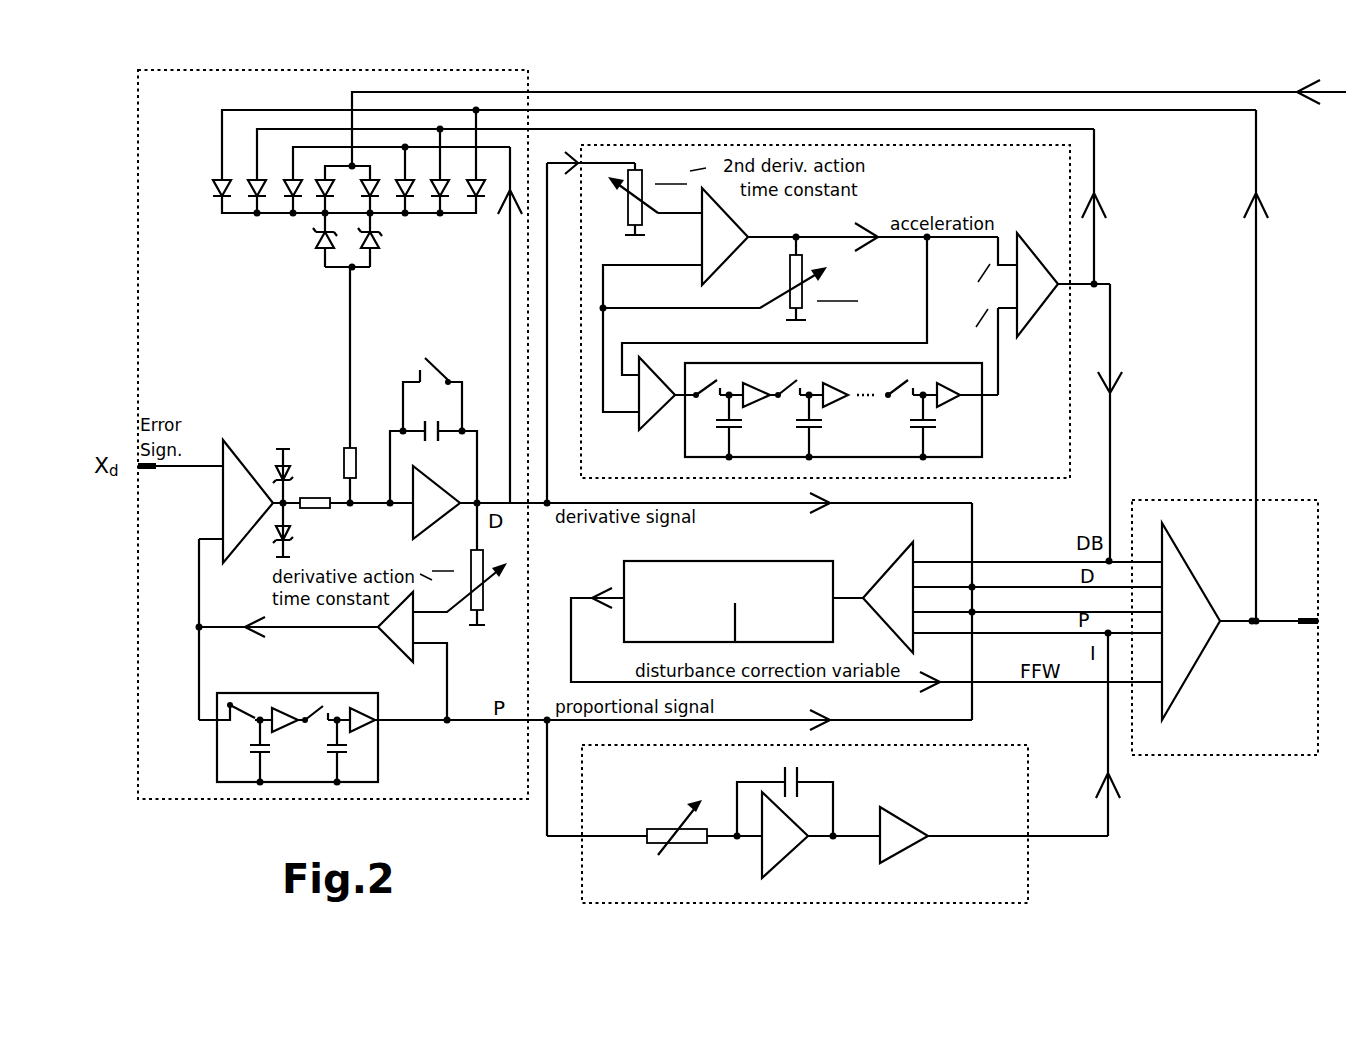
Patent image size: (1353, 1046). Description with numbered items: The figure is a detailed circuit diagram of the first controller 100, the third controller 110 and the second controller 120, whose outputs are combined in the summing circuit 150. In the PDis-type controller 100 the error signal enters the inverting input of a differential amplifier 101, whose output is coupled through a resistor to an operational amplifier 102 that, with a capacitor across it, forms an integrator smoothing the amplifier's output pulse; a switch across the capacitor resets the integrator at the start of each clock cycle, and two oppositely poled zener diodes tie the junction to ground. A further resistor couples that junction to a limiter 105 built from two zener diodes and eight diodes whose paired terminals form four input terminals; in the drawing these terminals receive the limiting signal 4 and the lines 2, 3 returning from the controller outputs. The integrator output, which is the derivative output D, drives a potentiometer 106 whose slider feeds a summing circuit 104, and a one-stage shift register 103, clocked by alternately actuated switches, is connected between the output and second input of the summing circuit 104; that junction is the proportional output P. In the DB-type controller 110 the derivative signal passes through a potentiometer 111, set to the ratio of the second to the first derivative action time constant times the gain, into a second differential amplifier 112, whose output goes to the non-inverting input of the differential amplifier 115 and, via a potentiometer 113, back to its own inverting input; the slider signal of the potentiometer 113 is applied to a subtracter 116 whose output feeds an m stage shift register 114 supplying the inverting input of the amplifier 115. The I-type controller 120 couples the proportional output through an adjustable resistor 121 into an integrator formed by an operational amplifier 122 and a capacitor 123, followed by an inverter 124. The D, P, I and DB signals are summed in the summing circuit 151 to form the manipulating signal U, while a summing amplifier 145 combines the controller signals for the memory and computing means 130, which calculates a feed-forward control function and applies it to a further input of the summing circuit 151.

The first controller 100 is at (333, 434).
The differential amplifier 101 is at (248, 571).
The operational amplifier 102 is at (680, 480).
The one-stage shift register 103 is at (288, 728).
The summing circuit 104 is at (325, 658).
The limiter 105 is at (769, 297).
The potentiometer 106 is at (467, 567).
The third controller 110 is at (825, 311).
The potentiometer 111 is at (646, 196).
The second differential amplifier 112 is at (799, 300).
The potentiometer 113 is at (730, 280).
The m stage shift register 114 is at (854, 402).
The differential amplifier 115 is at (1039, 310).
The differential amplifier 116 is at (766, 347).
The second controller 120 is at (805, 824).
The adjustable resistor 121 is at (654, 835).
The operational amplifier 122 is at (821, 835).
The capacitor 123 is at (785, 795).
The inverter 124 is at (1000, 752).
The memory and computing means 130 is at (866, 613).
The summing amplifier 145 is at (997, 597).
The summing circuit 150 is at (1225, 627).
The summing circuit 151 is at (1253, 621).
The output circuit 2 is at (1098, 206).
The limiting signal line 3 is at (1252, 367).
The limiting signal 4 is at (1173, 84).